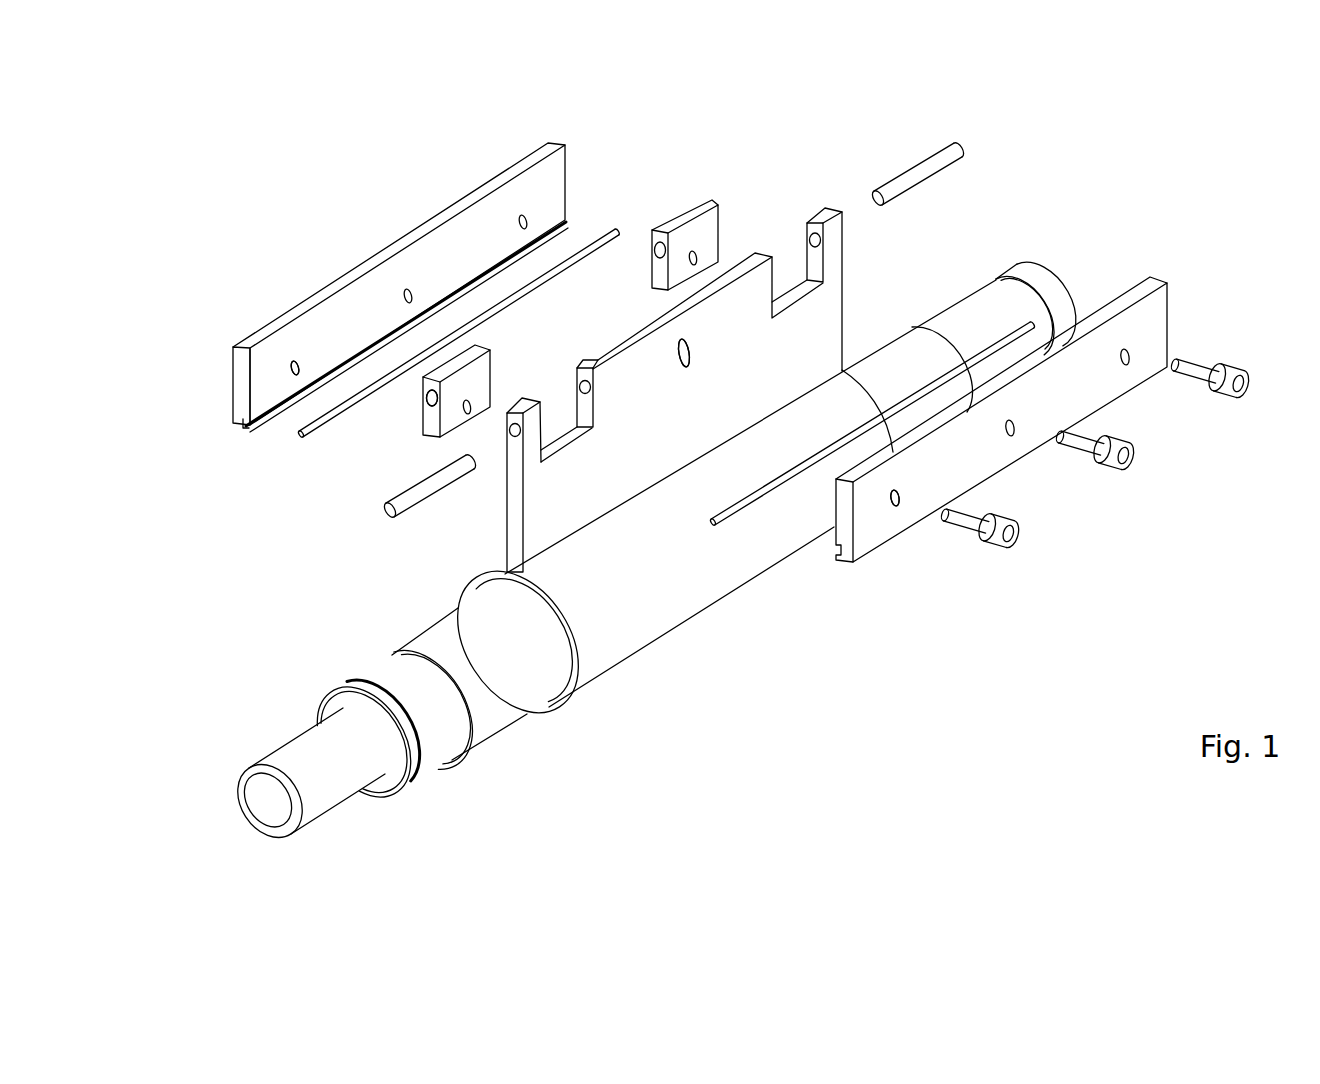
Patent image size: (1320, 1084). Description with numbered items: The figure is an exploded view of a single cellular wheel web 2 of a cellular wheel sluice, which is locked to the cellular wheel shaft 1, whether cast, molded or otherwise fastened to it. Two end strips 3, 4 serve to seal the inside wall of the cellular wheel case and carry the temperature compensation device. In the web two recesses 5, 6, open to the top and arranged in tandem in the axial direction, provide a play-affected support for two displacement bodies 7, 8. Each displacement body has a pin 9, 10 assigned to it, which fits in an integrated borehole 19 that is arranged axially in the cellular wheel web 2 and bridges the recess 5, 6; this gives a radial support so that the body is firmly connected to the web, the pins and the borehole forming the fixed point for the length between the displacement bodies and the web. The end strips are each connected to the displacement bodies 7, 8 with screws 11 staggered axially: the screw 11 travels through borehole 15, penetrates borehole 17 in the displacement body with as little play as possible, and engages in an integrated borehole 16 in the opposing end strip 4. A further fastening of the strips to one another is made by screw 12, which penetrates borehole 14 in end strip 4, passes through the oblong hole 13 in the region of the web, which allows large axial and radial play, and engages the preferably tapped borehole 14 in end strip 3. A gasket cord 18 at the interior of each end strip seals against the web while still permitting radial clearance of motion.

The cellular wheel shaft 1 is at (635, 588).
The cellular wheel web 2 is at (810, 325).
The end strip 3 is at (540, 180).
The end strip 4 is at (1150, 313).
The recess 5 is at (550, 412).
The recess 6 is at (783, 250).
The displacement body 7 is at (703, 227).
The displacement body 8 is at (422, 422).
The pin 9 is at (410, 497).
The pin 10 is at (932, 152).
The screw 11 is at (1147, 690).
The screw 12 is at (1078, 452).
The oblong hole 13 is at (687, 368).
The borehole 14 is at (1028, 688).
The borehole 15 is at (893, 507).
The borehole 16 is at (293, 362).
The borehole 17 is at (423, 435).
The gasket cord 18 is at (288, 433).
The borehole 19 is at (583, 387).